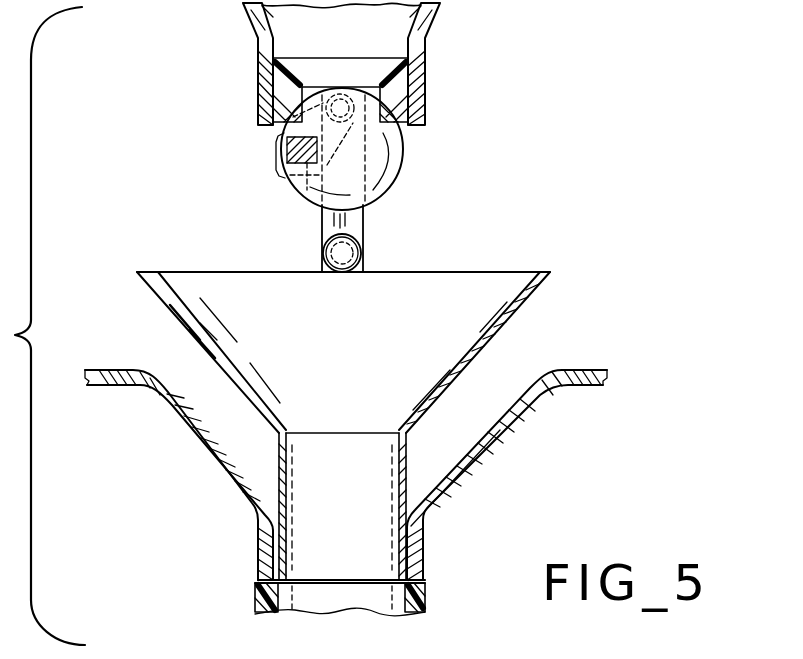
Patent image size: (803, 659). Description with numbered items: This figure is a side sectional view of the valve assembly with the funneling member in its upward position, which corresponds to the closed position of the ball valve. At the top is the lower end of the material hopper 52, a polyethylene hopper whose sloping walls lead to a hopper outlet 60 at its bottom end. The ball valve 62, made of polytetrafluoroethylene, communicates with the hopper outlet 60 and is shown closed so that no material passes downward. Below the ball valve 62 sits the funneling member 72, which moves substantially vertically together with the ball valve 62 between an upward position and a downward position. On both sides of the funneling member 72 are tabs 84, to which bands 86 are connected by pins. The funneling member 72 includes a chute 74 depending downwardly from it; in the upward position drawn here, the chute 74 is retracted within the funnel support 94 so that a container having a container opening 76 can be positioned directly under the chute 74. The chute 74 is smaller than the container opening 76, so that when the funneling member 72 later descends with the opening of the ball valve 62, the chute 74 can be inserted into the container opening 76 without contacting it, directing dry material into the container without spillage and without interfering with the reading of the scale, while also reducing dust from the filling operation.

The material hopper 52 is at (250, 19).
The hopper outlet 60 is at (363, 90).
The ball valve 62 is at (388, 158).
The bands 86 is at (355, 224).
The tabs 84 is at (365, 268).
The funneling member 72 is at (527, 300).
The chute 74 is at (405, 470).
The funnel support 94 is at (510, 420).
The container opening 76 is at (256, 598).